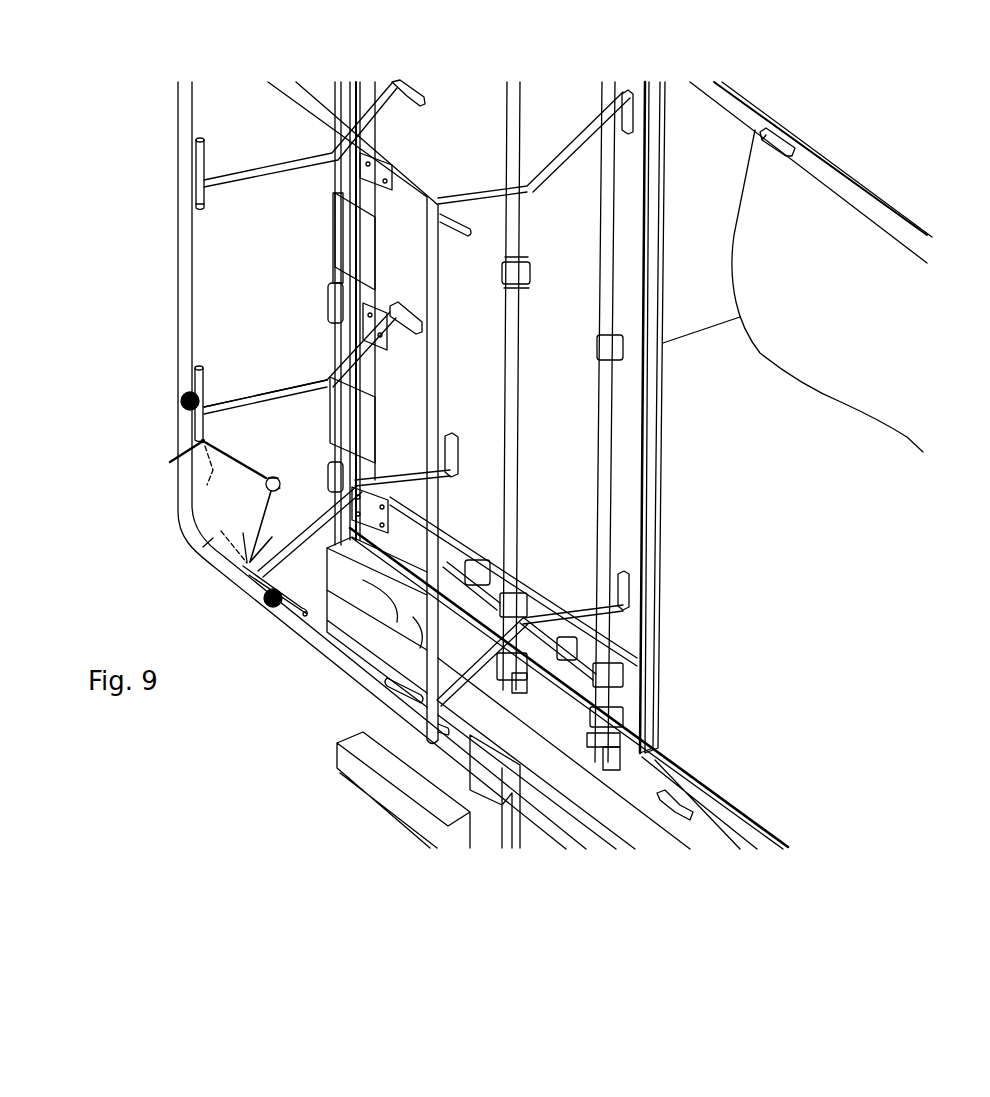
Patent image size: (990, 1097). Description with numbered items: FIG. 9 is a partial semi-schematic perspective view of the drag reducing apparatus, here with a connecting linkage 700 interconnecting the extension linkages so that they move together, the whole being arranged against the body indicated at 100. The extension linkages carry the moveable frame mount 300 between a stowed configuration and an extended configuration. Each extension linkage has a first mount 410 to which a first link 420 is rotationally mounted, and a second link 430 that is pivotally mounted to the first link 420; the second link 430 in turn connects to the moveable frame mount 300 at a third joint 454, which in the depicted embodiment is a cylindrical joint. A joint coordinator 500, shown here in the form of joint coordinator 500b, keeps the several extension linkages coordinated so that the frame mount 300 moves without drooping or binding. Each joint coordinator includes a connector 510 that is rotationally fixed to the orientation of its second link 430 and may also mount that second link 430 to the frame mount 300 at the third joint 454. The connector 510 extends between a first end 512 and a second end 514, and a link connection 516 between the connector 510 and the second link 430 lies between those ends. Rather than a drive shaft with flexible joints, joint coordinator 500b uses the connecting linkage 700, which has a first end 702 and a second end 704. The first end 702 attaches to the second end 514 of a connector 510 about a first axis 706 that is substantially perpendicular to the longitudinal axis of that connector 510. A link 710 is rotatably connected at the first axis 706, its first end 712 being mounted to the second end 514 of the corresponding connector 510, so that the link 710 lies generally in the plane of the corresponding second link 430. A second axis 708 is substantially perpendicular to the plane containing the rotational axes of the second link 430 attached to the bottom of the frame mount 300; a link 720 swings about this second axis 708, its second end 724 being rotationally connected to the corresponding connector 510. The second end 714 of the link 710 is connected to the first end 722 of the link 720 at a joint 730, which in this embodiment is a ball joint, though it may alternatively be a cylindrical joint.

The vehicle body 100 is at (880, 151).
The moveable frame mount 300 is at (187, 260).
The first mount 410 is at (455, 452).
The first link 420 is at (355, 378).
The second link 430 is at (301, 548).
The third joint 454 is at (183, 408).
The joint coordinator 500 is at (205, 392).
The joint coordinator 500b is at (265, 387).
The connector 510 is at (206, 158).
The first end 512 is at (203, 140).
The second end 514 is at (203, 210).
The link connection 516 is at (205, 188).
The connecting linkage 700 is at (232, 495).
The first end 702 is at (206, 443).
The second end 704 is at (252, 560).
The first axis 706 is at (212, 475).
The second axis 708 is at (223, 538).
The link 710 is at (238, 462).
The first end 712 is at (175, 456).
The second end 714 is at (271, 477).
The link 720 is at (263, 516).
The first end 722 is at (279, 489).
The second end 724 is at (244, 539).
The joint 730 is at (279, 480).